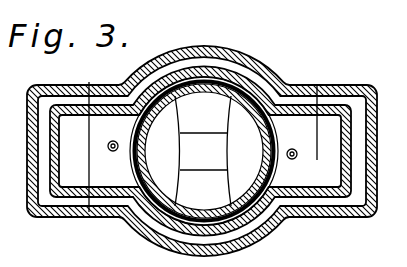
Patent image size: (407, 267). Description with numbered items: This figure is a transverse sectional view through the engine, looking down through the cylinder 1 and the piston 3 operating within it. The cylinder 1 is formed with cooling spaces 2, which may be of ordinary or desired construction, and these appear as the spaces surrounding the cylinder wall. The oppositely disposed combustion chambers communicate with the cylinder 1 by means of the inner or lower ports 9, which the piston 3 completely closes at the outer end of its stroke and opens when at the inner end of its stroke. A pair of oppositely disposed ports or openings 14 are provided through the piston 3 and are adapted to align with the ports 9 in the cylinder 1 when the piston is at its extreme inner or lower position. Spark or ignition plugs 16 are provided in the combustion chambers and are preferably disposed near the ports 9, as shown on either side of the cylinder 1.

The cylinder 1 is at (285, 88).
The cooling spaces 2 is at (356, 167).
The piston 3 is at (193, 151).
The inner or lower ports 9 is at (122, 174).
The ports or openings 14 is at (134, 163).
The spark or ignition plugs 16 is at (109, 143).